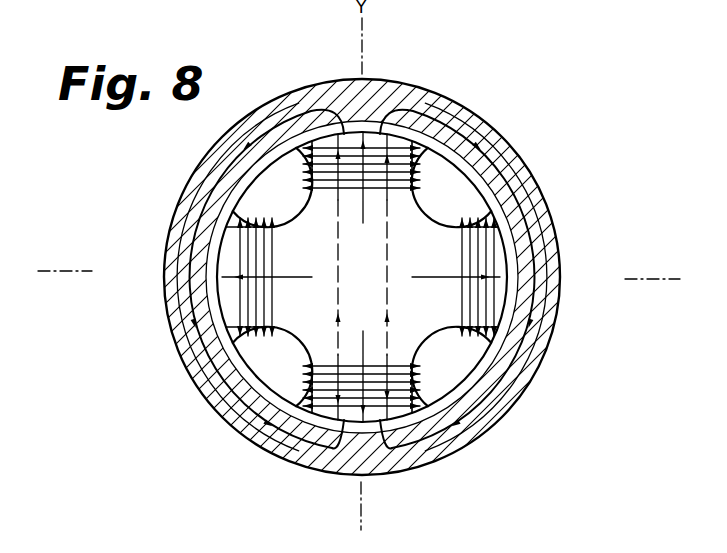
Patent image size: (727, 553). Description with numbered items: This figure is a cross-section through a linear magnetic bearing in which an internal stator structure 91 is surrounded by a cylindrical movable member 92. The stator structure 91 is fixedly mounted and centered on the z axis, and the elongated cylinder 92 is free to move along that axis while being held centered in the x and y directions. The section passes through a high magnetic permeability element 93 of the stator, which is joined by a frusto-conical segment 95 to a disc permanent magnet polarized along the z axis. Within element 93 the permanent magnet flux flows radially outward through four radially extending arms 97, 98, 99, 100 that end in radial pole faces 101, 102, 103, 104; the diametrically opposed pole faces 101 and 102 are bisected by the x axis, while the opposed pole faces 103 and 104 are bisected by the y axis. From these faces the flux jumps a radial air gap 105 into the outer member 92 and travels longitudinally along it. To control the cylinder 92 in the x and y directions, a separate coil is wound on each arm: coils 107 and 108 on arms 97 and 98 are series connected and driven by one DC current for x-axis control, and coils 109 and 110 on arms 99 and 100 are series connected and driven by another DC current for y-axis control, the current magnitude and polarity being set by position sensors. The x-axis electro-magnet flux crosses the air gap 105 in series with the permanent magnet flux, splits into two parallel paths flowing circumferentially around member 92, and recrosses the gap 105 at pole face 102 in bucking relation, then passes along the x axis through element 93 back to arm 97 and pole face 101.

The internal stator structure 91 is at (283, 357).
The cylindrical movable member 92 is at (178, 184).
The high magnetic permeability element 93 is at (298, 213).
The frusto-conical segment 95 is at (458, 188).
The radially extending arm 97 is at (223, 305).
The radially extending arm 98 is at (502, 260).
The radially extending arm 99 is at (372, 137).
The radially extending arm 100 is at (377, 415).
The radial pole face 101 is at (214, 272).
The radial pole face 102 is at (565, 280).
The radial pole face 103 is at (340, 133).
The radial pole face 104 is at (400, 423).
The radial air gap 105 is at (507, 322).
The coil 107 is at (237, 243).
The coil 108 is at (523, 205).
The coil 109 is at (397, 152).
The coil 110 is at (372, 405).